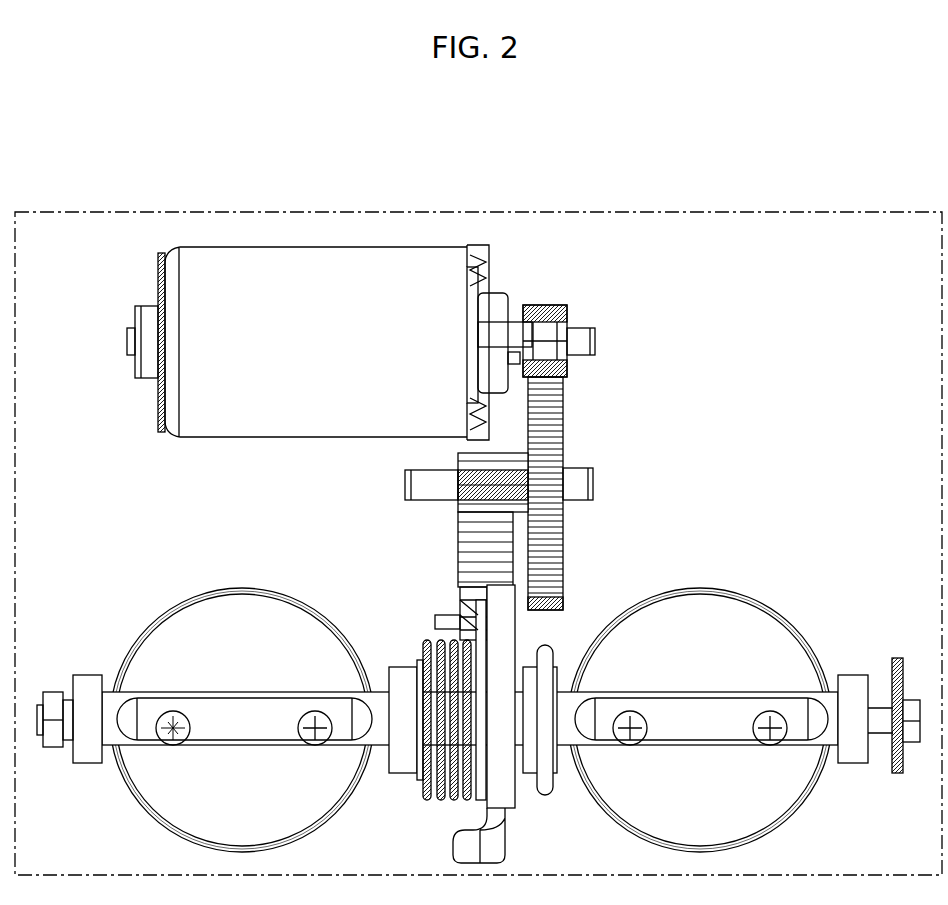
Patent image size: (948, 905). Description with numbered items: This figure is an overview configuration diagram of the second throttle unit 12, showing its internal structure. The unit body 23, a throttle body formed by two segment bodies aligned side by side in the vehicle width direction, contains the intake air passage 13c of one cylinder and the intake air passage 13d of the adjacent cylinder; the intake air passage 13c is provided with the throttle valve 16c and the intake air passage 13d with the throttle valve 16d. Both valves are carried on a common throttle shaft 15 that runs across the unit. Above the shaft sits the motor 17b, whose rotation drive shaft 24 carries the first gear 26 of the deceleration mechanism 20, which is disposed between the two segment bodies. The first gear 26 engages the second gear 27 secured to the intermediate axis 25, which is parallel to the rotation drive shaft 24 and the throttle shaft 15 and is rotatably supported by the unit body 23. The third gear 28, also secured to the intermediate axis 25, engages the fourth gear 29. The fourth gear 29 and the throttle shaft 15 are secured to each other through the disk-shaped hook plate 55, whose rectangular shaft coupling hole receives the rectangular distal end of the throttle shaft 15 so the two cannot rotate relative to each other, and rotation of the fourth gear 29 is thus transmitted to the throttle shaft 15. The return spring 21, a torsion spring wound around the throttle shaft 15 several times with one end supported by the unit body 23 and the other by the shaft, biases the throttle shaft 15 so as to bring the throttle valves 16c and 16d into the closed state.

The second throttle unit 12 is at (813, 172).
The unit body 23 is at (862, 210).
The motor 17b is at (263, 247).
The deceleration mechanism 20 is at (585, 296).
The first gear 26 is at (544, 305).
The rotation drive shaft 24 is at (595, 340).
The second gear 27 is at (565, 395).
The third gear 28 is at (458, 460).
The intermediate axis 25 is at (595, 484).
The fourth gear 29 is at (458, 540).
The return spring 21 is at (425, 640).
The throttle valve 16c is at (235, 618).
The throttle valve 16d is at (701, 618).
The intake air passage 13c is at (163, 610).
The intake air passage 13d is at (760, 610).
The throttle shaft 15 is at (905, 700).
The hook plate 55 is at (505, 838).